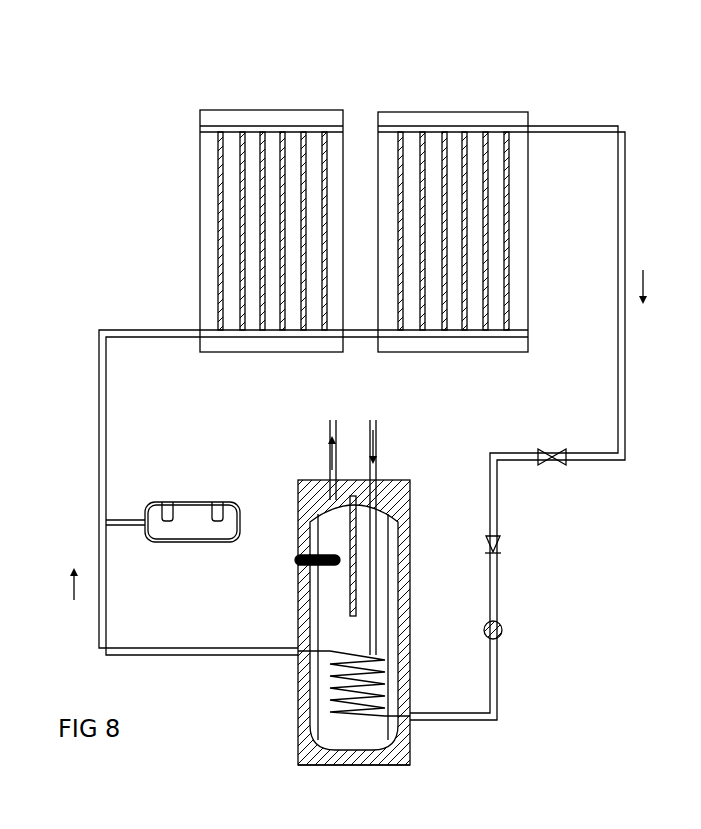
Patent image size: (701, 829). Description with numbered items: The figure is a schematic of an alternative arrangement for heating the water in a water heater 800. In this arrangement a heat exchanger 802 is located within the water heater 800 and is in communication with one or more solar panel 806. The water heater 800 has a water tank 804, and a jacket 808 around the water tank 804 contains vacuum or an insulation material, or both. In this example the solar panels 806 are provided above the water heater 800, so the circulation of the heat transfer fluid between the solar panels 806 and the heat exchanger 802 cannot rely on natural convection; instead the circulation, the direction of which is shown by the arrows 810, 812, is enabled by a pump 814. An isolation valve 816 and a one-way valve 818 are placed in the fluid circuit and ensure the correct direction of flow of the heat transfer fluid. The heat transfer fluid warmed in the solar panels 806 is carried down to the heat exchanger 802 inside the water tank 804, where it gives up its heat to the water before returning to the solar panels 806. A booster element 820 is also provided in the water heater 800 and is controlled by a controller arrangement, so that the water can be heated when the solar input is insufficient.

The water heater 800 is at (408, 540).
The heat exchanger 802 is at (412, 758).
The water tank 804 is at (397, 648).
The solar panel 806 is at (303, 108).
The jacket 808 is at (408, 590).
The arrow 810 is at (168, 492).
The arrow 812 is at (550, 423).
The pump 814 is at (503, 627).
The isolation valve 816 is at (567, 463).
The one-way valve 818 is at (498, 542).
The booster element 820 is at (300, 556).